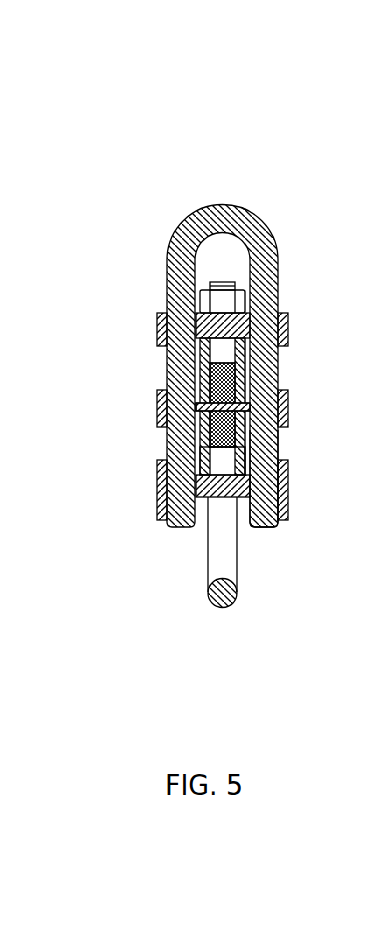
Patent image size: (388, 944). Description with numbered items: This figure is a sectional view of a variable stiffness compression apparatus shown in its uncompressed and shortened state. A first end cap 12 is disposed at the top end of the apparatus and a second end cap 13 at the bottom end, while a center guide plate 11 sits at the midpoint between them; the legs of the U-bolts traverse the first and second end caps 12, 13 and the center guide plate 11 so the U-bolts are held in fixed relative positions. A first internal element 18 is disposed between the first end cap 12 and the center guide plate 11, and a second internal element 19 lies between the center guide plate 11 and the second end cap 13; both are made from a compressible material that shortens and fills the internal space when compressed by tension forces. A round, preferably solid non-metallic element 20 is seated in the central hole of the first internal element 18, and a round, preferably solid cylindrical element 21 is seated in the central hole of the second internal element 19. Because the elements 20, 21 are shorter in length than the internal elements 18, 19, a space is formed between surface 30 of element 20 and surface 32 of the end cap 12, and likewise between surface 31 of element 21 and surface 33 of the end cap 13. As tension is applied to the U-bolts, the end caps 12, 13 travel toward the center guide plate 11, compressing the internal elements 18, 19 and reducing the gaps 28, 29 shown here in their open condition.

The center guide plate 11 is at (290, 407).
The first end cap 12 is at (157, 320).
The second end cap 13 is at (160, 480).
The first internal element 18 is at (193, 346).
The second internal element 19 is at (197, 447).
The round solid non-metallic element 20 is at (205, 386).
The round solid cylindrical element 21 is at (195, 408).
The gap 28 is at (270, 366).
The gap 29 is at (287, 435).
The surface of element 20 30 is at (247, 364).
The surface of element 21 31 is at (240, 452).
The surface of end cap 12 32 is at (250, 340).
The surface of end cap 13 33 is at (280, 525).